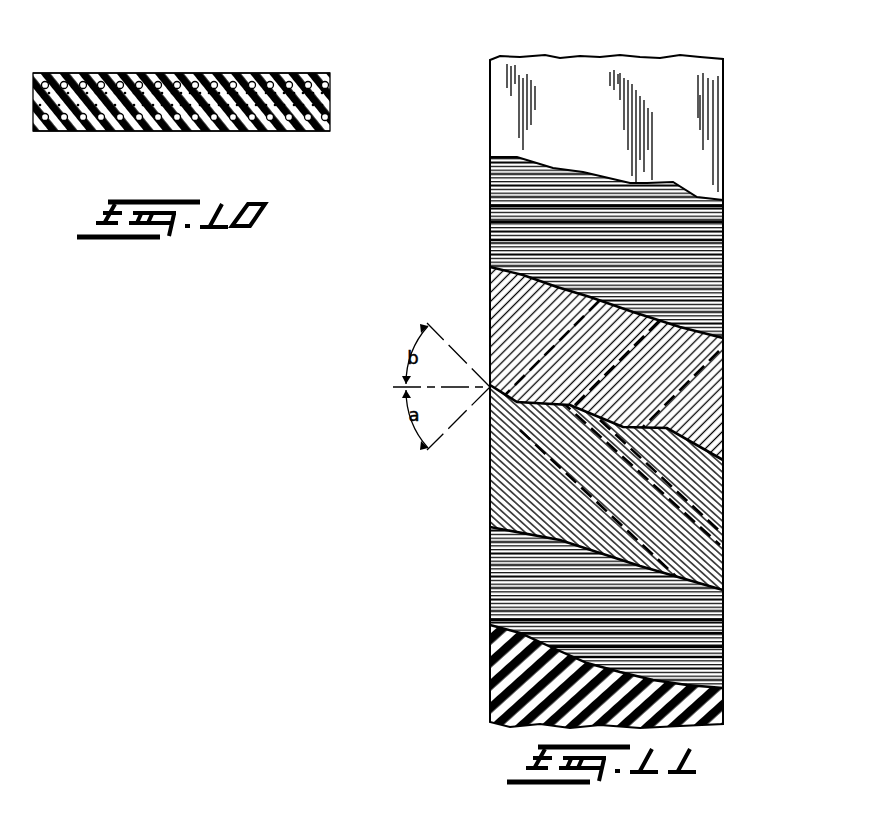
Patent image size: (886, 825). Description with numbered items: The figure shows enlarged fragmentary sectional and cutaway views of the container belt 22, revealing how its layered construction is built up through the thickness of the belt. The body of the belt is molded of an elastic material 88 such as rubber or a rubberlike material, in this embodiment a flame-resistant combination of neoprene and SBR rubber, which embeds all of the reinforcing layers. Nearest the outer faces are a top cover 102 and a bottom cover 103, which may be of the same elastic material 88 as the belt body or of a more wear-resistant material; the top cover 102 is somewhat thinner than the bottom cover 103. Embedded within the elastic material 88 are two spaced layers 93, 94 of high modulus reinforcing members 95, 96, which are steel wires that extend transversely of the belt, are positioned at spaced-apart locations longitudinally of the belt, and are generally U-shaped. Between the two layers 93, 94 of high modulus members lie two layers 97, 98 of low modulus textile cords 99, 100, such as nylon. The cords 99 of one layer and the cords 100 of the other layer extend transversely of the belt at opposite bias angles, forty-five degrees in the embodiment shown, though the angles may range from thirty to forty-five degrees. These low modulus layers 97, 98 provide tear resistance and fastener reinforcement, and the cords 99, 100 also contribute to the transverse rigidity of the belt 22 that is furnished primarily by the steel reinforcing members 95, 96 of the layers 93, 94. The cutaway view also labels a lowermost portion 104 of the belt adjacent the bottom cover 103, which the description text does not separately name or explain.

In FIG. 11, the container belt 22 is at (725, 145).
In FIG. 10, the elastic material 88 is at (202, 86).
In FIG. 10, the layer of reinforcing members 93 is at (330, 83).
In FIG. 11, the layer of reinforcing members 93 is at (660, 207).
In FIG. 10, the layer of reinforcing members 94 is at (331, 118).
In FIG. 11, the layer of reinforcing members 94 is at (678, 612).
In FIG. 10, the reinforcing members 95 is at (292, 80).
In FIG. 11, the reinforcing members 95 is at (723, 240).
In FIG. 10, the reinforcing members 96 is at (292, 118).
In FIG. 11, the reinforcing members 96 is at (718, 657).
In FIG. 10, the layer of textile cords 97 is at (330, 92).
In FIG. 11, the layer of textile cords 97 is at (683, 347).
In FIG. 10, the layer of textile cords 98 is at (330, 110).
In FIG. 11, the layer of textile cords 98 is at (688, 468).
In FIG. 10, the textile cords 99 is at (95, 90).
In FIG. 11, the textile cords 99 is at (723, 418).
In FIG. 10, the textile cords 100 is at (93, 112).
In FIG. 11, the textile cords 100 is at (723, 520).
In FIG. 10, the top cover 102 is at (332, 74).
In FIG. 10, the bottom cover 103 is at (332, 129).
In FIG. 11, the bottom cover 103 is at (700, 115).
In FIG. 11, the backing layer 104 is at (690, 702).